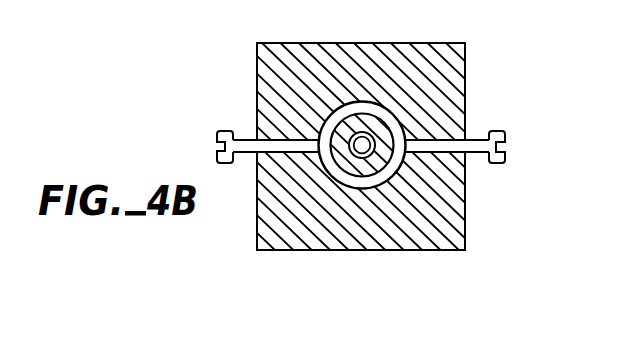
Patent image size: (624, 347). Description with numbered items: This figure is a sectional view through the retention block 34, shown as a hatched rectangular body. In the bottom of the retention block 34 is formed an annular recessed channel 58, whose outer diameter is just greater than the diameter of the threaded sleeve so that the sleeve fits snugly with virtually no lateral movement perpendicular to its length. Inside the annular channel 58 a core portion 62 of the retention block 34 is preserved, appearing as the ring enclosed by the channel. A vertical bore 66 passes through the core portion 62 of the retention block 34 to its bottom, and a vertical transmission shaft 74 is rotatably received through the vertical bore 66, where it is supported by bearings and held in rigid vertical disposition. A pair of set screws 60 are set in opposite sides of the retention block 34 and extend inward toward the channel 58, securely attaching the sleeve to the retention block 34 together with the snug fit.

The retention block 34 is at (466, 219).
The annular recessed channel 58 is at (372, 103).
The set screws 60 is at (230, 130).
The core portion 62 is at (359, 126).
The vertical bore 66 is at (374, 142).
The vertical transmission shaft 74 is at (349, 148).